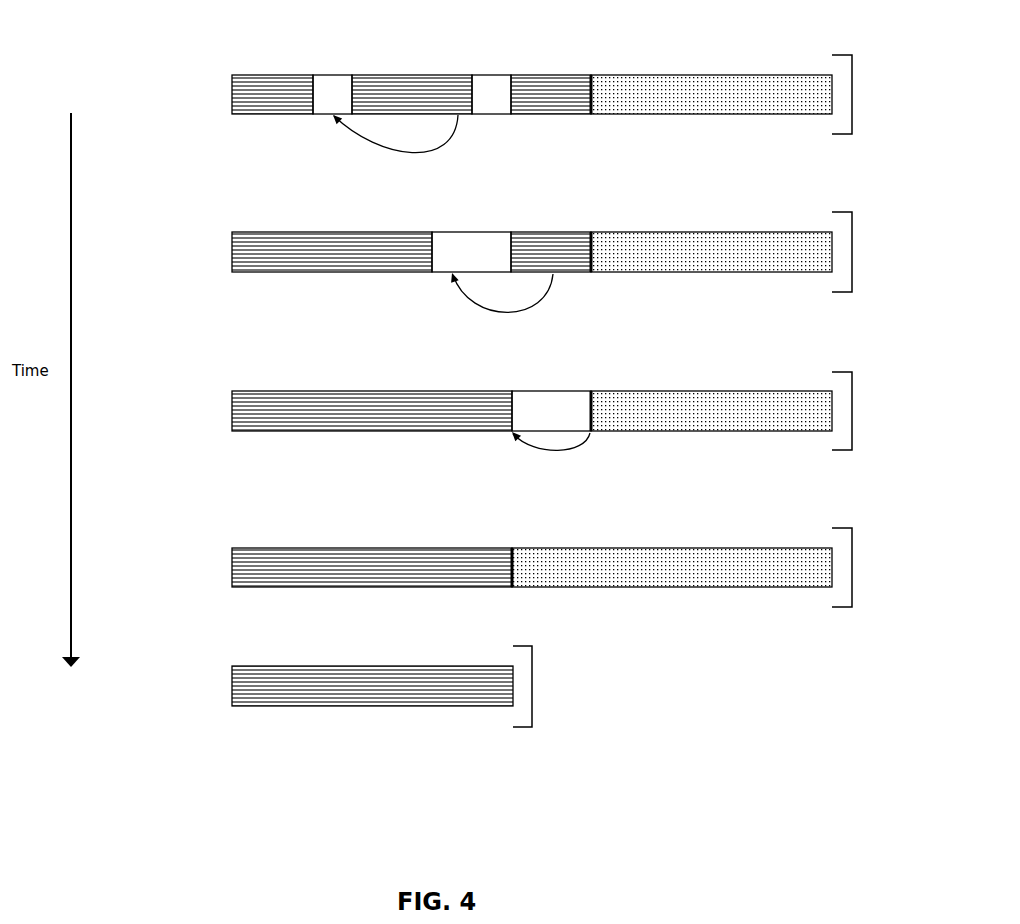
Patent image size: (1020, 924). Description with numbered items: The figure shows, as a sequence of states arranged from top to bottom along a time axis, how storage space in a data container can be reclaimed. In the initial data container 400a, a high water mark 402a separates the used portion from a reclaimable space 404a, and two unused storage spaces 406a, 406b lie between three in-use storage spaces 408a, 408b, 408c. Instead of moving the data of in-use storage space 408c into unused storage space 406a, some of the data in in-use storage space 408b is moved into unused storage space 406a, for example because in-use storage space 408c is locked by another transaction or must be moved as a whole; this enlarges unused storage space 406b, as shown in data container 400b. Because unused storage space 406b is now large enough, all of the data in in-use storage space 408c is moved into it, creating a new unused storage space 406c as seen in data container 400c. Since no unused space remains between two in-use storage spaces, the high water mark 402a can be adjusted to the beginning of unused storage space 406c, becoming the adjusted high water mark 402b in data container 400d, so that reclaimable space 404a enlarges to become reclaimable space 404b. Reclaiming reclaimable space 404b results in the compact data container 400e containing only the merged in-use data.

The data container 400a is at (873, 94).
The data container 400b is at (873, 252).
The data container 400c is at (873, 411).
The data container 400d is at (873, 567).
The data container 400e is at (554, 686).
The high water mark 402a is at (591, 75).
The high water mark 402b is at (512, 548).
The reclaimable space 404a is at (692, 114).
The reclaimable space 404b is at (630, 587).
The unused storage space 406a is at (333, 75).
The unused storage space 406b is at (492, 75).
The unused storage space 406c is at (552, 391).
The in-use storage space 408a is at (272, 114).
The in-use storage space 408b is at (373, 75).
The in-use storage space 408c is at (552, 114).